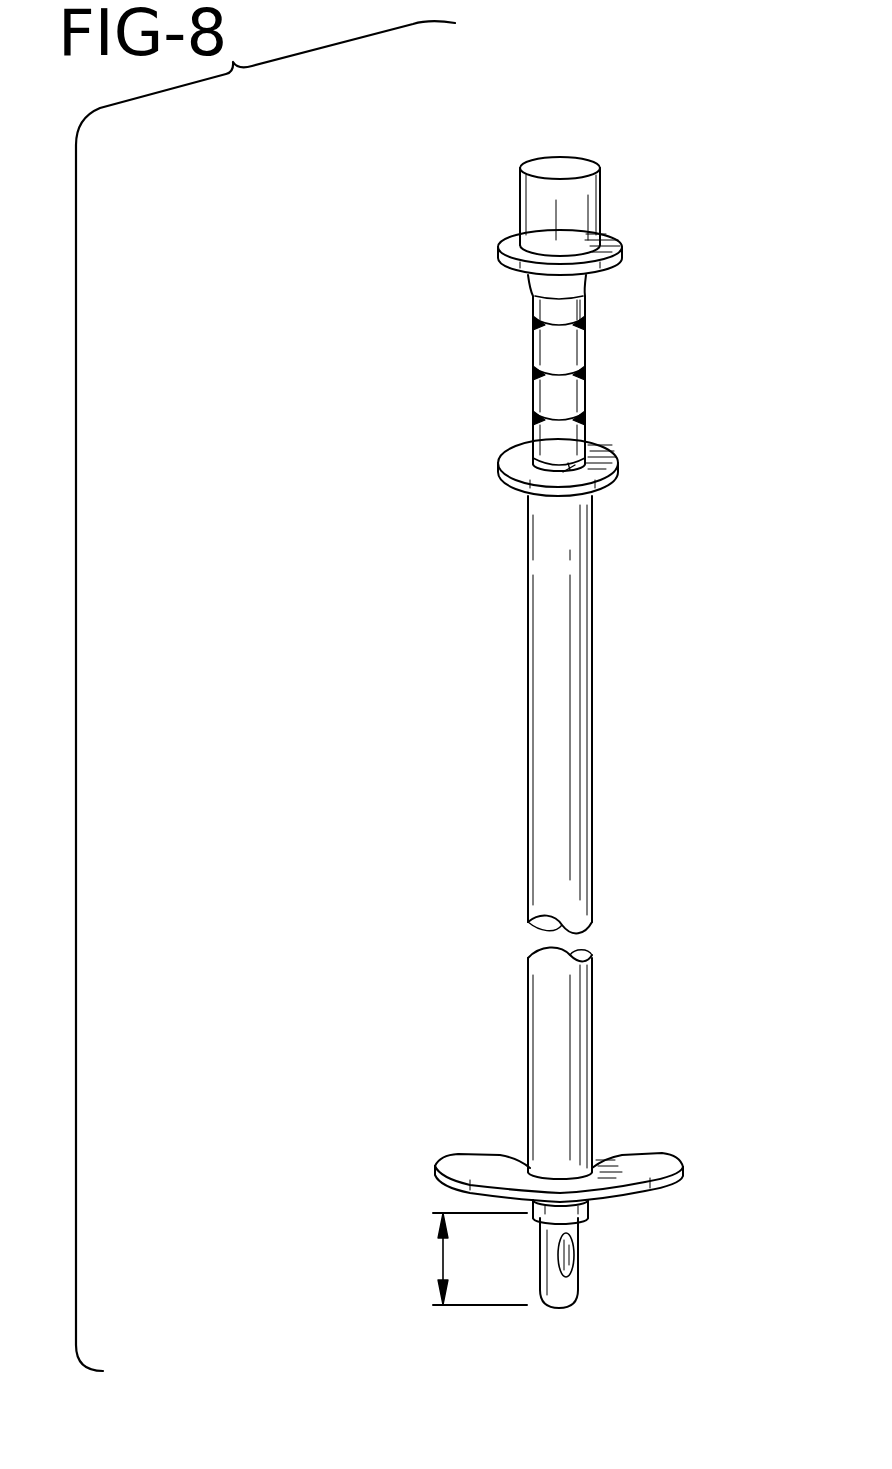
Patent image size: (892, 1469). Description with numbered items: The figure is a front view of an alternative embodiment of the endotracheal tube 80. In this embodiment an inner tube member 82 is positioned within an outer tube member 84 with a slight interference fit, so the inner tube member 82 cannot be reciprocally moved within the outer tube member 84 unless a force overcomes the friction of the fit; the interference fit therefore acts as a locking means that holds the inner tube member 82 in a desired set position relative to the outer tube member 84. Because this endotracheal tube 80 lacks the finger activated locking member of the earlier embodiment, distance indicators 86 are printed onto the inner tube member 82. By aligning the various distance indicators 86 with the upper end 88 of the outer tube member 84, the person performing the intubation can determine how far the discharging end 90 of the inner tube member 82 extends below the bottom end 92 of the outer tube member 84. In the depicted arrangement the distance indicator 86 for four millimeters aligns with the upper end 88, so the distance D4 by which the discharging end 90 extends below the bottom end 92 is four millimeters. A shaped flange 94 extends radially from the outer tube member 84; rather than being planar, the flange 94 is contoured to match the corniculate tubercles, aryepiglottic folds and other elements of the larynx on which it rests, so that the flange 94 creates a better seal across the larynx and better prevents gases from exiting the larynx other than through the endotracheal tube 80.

The endotracheal tube 80 is at (418, 203).
The inner tube member 82 is at (582, 302).
The outer tube member 84 is at (543, 785).
The distance indicators 86 is at (586, 368).
The upper end 88 is at (513, 455).
The discharging end 90 is at (582, 1292).
The bottom end 92 is at (585, 1202).
The shaped flange 94 is at (637, 1165).
The distance D4 is at (443, 1262).